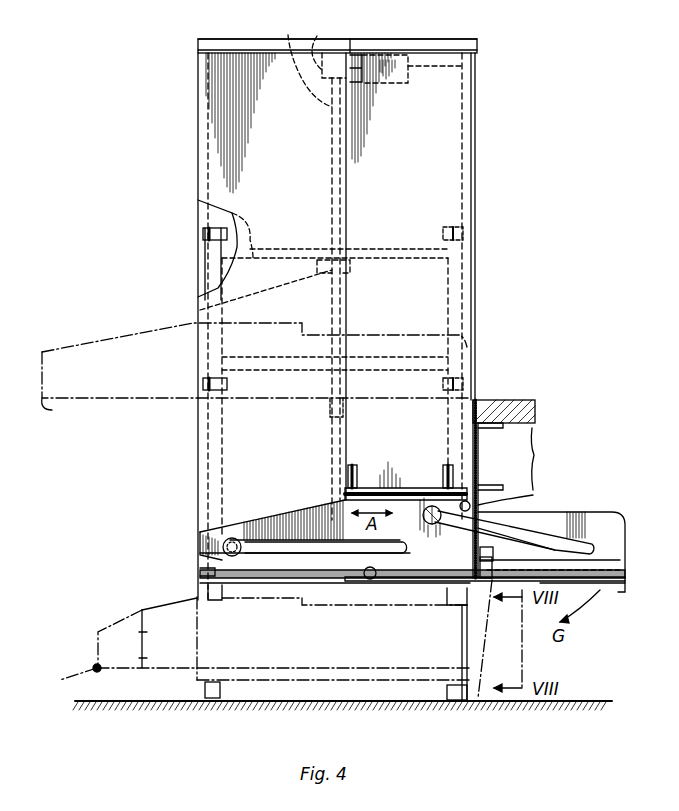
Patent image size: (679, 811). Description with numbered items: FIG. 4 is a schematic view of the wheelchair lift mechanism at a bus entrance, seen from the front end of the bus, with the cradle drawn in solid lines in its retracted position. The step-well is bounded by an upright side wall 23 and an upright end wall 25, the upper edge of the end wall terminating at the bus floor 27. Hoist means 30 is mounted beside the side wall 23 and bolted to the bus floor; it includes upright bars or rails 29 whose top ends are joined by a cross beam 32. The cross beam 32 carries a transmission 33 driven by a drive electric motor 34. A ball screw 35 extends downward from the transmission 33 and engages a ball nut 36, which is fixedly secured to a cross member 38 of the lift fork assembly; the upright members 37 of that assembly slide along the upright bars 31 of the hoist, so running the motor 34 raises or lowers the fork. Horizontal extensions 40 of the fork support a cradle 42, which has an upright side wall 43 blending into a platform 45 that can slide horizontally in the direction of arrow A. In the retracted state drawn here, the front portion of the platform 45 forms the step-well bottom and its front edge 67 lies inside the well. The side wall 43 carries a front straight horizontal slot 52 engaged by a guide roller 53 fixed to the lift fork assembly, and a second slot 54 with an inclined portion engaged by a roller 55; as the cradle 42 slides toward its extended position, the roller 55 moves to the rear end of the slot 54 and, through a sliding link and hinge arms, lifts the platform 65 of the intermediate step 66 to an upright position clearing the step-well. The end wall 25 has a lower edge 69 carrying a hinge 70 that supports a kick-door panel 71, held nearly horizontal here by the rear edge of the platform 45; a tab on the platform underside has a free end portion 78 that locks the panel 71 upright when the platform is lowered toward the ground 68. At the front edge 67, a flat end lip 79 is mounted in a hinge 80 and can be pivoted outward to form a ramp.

The upright side wall 23 is at (243, 450).
The upright end wall 25 is at (478, 510).
The bus floor 27 is at (525, 400).
The upright bars or rails 29 is at (198, 104).
The hoist means 30 is at (366, 38).
The upright bars 31 is at (506, 430).
The cross beam 32 is at (198, 45).
The transmission 33 is at (329, 47).
The drive electric motor 34 is at (462, 66).
The ball screw 35 is at (288, 36).
The ball nut 36 is at (200, 306).
The upright members 37 is at (212, 262).
The cross member 38 is at (198, 213).
The horizontal extensions 40 is at (212, 603).
The cradle 42 is at (228, 512).
The upright side wall 43 is at (573, 512).
The platform 45 is at (160, 400).
The front straight horizontal slot 52 is at (330, 555).
The guide roller 53 is at (240, 538).
The second slot 54 is at (568, 545).
The roller 55 is at (424, 520).
The platform 65 is at (345, 494).
The intermediate step 66 is at (420, 488).
The front edge 67 is at (200, 580).
The ground 68 is at (165, 702).
The lower edge 69 is at (470, 580).
The hinge 70 is at (493, 553).
The kick-door panel 71 is at (610, 582).
The free end portion 78 is at (582, 590).
The flat end lip 79 is at (372, 580).
The hinge 80 is at (205, 568).